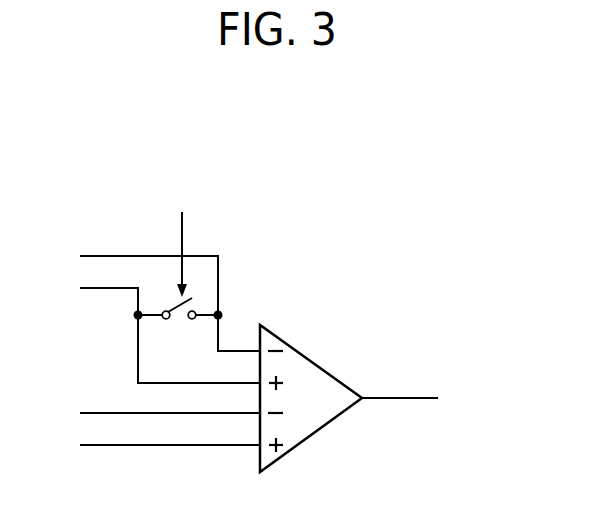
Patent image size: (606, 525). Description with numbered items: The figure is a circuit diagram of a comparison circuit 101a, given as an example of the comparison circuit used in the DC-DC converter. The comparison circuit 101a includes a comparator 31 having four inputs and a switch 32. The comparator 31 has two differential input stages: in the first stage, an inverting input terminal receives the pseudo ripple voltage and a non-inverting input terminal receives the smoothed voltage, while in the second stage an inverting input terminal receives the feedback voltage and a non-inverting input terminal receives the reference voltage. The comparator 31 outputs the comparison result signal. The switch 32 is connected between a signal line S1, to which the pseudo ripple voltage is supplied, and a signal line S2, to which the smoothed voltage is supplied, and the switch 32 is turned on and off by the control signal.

The comparison circuit 101a is at (489, 180).
The comparator 31 is at (312, 436).
The switch 32 is at (181, 321).
The signal line S1 is at (218, 283).
The signal line S2 is at (138, 339).